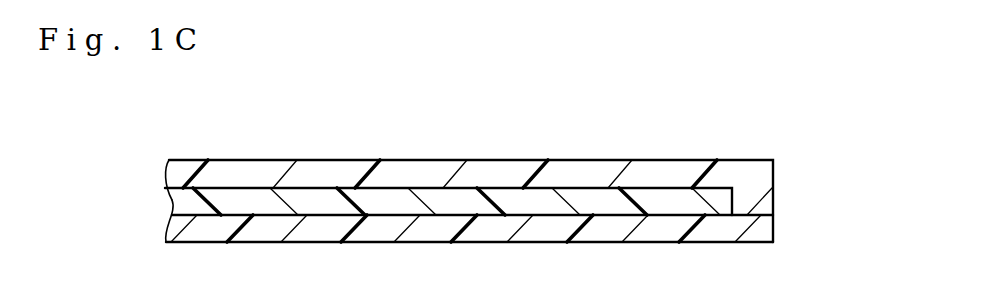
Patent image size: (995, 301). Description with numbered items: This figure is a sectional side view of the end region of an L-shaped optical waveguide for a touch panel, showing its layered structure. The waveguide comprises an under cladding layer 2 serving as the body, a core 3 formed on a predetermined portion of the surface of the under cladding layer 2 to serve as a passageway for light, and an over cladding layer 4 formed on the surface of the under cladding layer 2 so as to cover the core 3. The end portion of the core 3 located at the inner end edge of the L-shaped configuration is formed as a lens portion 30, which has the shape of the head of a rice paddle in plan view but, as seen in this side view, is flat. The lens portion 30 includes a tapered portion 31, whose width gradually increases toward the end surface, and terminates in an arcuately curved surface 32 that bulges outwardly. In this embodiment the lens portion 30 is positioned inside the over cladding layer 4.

The under cladding layer 2 is at (766, 229).
The core 3 is at (725, 202).
The over cladding layer 4 is at (766, 172).
The lens portion 30 is at (730, 98).
The tapered portion 31 is at (517, 198).
The arcuately curved surface 32 is at (735, 191).